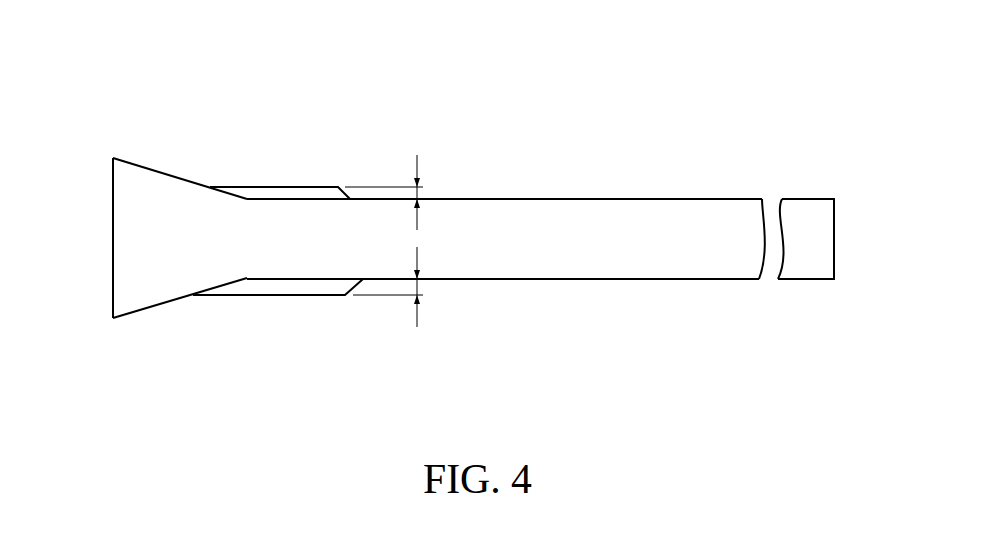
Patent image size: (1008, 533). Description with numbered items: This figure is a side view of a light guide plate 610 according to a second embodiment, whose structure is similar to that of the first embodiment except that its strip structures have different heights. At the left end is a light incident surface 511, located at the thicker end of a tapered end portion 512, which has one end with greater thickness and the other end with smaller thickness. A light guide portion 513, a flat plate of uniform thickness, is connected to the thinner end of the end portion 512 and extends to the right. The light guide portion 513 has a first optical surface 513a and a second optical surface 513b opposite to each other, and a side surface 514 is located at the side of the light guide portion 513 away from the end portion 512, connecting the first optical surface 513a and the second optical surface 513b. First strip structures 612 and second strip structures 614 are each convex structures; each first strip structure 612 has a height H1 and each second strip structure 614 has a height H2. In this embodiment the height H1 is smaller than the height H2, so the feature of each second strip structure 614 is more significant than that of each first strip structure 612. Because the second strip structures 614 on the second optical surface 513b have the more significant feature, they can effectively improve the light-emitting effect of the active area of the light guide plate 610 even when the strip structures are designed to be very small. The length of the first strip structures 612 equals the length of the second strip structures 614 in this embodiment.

The light guide plate 610 is at (77, 42).
The light incident surface 511 is at (112, 210).
The end portion 512 is at (145, 185).
The first strip structures 612 is at (312, 192).
The second strip structures 614 is at (303, 288).
The light guide portion 513 is at (506, 241).
The first optical surface 513a is at (660, 198).
The second optical surface 513b is at (662, 280).
The side surface 514 is at (834, 229).
The height of first strip structure H1 is at (424, 193).
The height of second strip structure H2 is at (424, 295).